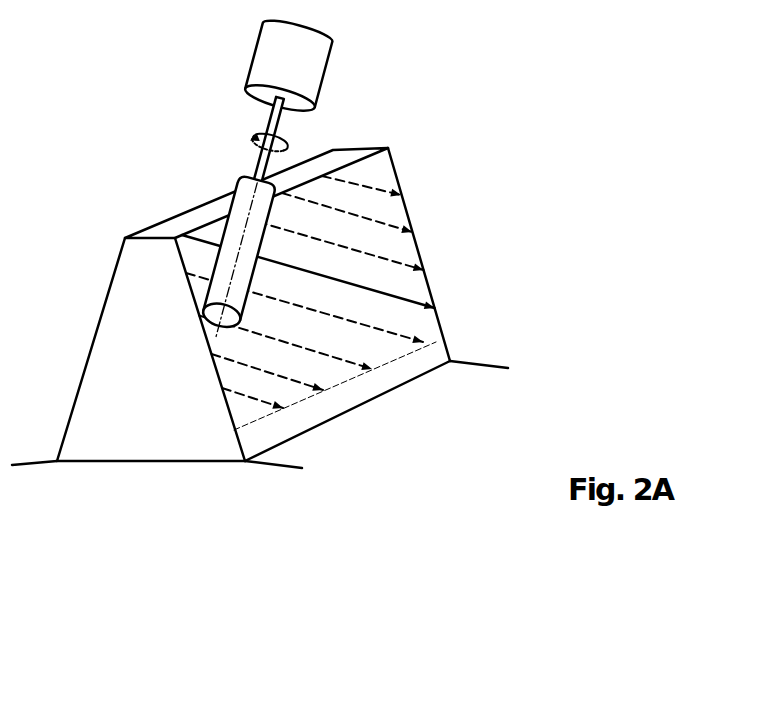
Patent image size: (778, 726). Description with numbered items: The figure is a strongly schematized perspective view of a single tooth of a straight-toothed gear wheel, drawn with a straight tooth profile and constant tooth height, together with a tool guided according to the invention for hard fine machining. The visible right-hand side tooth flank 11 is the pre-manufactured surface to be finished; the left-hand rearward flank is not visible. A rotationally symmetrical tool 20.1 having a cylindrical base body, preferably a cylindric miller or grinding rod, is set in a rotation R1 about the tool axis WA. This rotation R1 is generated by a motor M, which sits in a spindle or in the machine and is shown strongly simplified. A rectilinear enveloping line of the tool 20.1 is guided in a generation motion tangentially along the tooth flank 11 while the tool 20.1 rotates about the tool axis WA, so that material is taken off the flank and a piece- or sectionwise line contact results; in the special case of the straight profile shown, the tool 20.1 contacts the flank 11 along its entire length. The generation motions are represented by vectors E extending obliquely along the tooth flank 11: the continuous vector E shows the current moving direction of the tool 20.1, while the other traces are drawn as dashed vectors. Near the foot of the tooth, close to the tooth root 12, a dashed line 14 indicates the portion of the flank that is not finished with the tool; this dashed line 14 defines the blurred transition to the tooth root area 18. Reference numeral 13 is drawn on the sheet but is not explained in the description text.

The tooth flank 11 is at (389, 178).
The tooth root 12 is at (233, 463).
The upper edge of workpiece 13 is at (122, 237).
The dashed line 14 is at (347, 383).
The tooth root area 18 is at (413, 365).
The vectors E is at (417, 300).
The tool axis WA is at (304, 386).
The motor M is at (322, 60).
The rotation R1 is at (284, 143).
The tool 20.1 is at (230, 204).